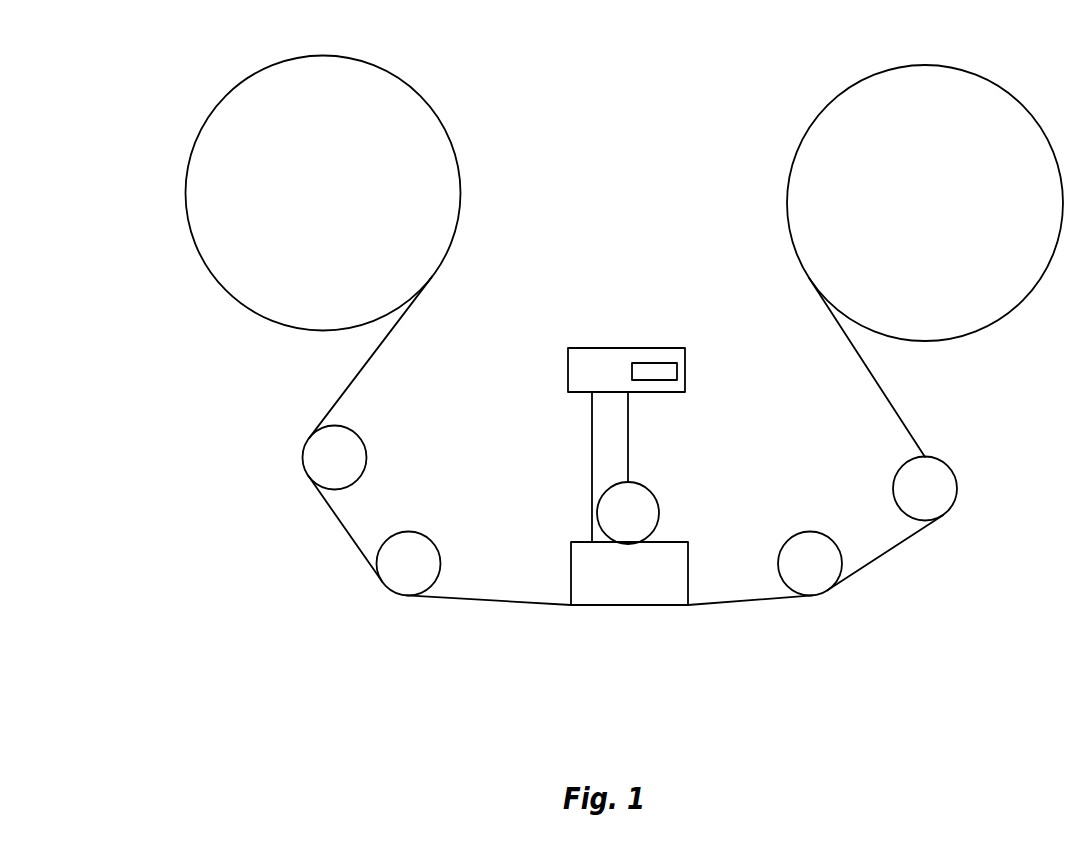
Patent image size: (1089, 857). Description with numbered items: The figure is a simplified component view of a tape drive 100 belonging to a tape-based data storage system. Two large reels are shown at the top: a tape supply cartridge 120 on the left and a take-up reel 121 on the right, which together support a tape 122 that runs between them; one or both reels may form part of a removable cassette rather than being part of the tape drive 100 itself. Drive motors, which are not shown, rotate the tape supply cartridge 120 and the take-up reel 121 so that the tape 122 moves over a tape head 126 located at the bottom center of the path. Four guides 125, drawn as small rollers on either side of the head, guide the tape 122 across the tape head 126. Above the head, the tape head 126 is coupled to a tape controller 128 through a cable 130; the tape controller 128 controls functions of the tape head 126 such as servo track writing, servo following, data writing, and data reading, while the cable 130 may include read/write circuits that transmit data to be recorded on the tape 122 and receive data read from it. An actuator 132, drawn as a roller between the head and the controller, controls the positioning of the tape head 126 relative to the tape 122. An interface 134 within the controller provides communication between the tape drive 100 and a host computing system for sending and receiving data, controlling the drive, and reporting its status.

The tape drive 100 is at (284, 388).
The tape supply cartridge 120 is at (458, 165).
The take-up reel 121 is at (1010, 313).
The tape 122 is at (492, 603).
The guides 125 is at (407, 532).
The tape head 126 is at (688, 570).
The tape controller 128 is at (625, 348).
The cable 130 is at (592, 508).
The actuator 132 is at (652, 493).
The interface 134 is at (667, 363).